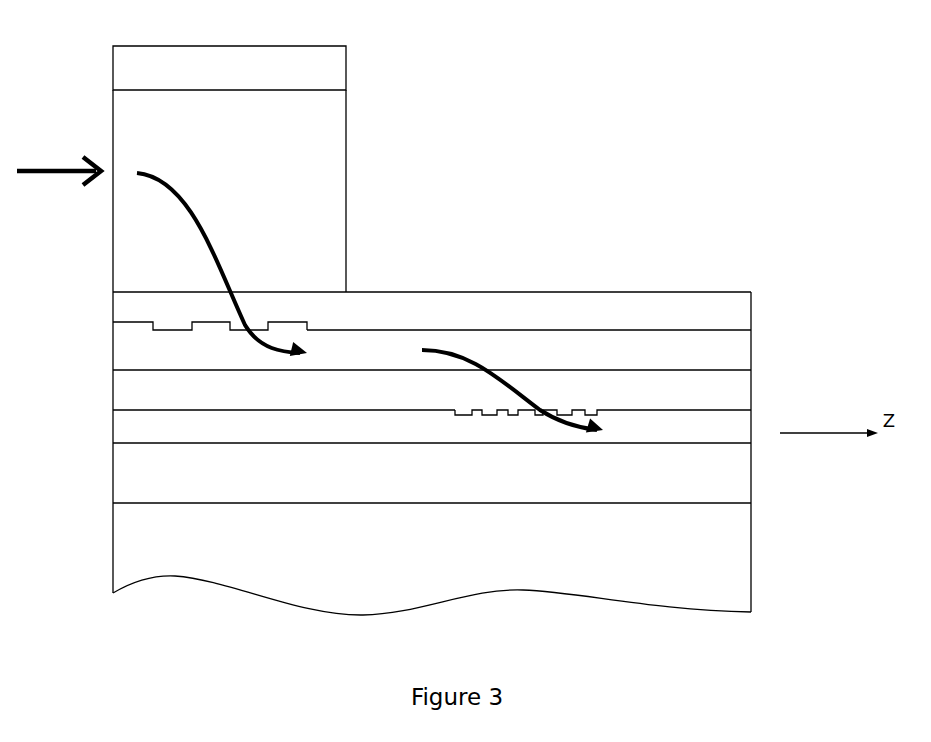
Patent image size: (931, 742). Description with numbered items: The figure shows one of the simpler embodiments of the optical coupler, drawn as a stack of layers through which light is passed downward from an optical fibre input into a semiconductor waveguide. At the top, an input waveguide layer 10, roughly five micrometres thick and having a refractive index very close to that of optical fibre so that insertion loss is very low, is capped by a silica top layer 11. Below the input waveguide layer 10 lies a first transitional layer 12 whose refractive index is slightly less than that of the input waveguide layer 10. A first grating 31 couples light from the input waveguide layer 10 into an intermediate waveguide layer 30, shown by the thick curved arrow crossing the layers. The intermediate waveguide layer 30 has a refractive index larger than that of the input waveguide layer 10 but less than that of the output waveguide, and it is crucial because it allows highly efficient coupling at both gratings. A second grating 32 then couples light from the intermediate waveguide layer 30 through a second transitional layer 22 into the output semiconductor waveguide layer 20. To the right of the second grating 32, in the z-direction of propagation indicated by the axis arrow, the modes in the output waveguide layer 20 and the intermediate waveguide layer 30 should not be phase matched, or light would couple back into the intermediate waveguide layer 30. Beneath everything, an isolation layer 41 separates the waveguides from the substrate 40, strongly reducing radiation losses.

The silica top layer 11 is at (229, 68).
The input waveguide layer 10 is at (229, 191).
The first transitional layer 12 is at (432, 311).
The first grating 31 is at (189, 333).
The intermediate waveguide layer 30 is at (432, 354).
The second transitional layer 22 is at (432, 395).
The second grating 32 is at (578, 407).
The output semiconductor waveguide layer 20 is at (432, 429).
The isolation layer 41 is at (432, 484).
The substrate 40 is at (432, 583).